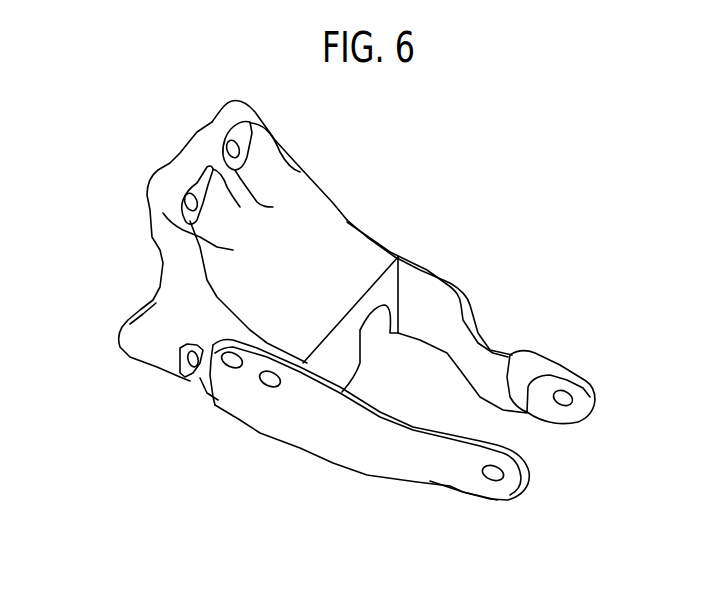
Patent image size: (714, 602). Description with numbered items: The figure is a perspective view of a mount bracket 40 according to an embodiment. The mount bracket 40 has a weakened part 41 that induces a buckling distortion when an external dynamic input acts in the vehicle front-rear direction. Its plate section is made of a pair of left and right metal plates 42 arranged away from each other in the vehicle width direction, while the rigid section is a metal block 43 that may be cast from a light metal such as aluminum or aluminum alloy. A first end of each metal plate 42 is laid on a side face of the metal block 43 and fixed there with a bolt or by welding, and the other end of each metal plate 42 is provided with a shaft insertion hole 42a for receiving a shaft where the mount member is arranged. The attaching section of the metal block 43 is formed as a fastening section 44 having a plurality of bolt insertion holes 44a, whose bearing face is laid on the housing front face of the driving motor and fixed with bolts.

The mount bracket 40 is at (370, 207).
The weakened part 41 is at (483, 337).
The metal plates 42 is at (443, 263).
The shaft insertion hole 42a is at (492, 480).
The metal block 43 is at (300, 210).
The fastening section 44 is at (168, 263).
The bolt insertion holes 44a is at (233, 143).